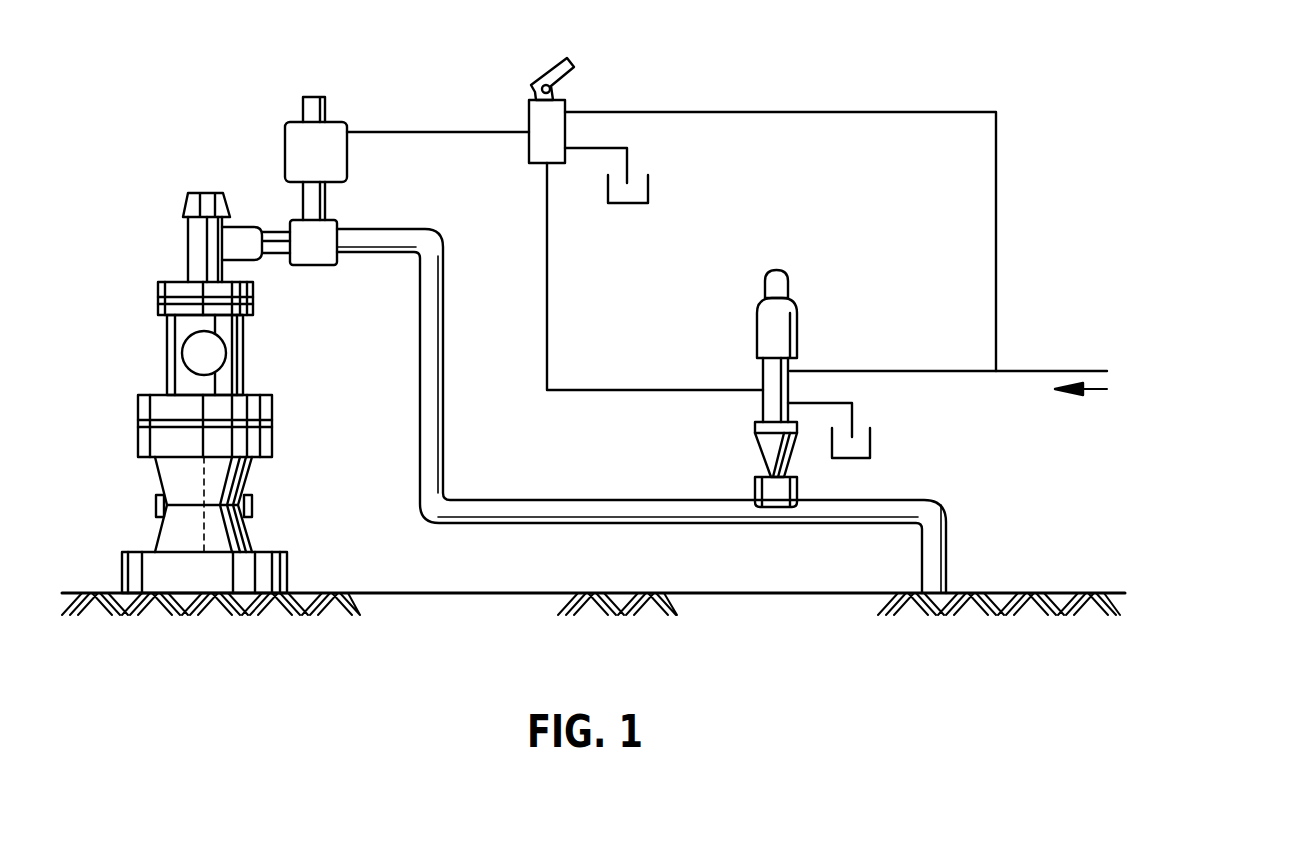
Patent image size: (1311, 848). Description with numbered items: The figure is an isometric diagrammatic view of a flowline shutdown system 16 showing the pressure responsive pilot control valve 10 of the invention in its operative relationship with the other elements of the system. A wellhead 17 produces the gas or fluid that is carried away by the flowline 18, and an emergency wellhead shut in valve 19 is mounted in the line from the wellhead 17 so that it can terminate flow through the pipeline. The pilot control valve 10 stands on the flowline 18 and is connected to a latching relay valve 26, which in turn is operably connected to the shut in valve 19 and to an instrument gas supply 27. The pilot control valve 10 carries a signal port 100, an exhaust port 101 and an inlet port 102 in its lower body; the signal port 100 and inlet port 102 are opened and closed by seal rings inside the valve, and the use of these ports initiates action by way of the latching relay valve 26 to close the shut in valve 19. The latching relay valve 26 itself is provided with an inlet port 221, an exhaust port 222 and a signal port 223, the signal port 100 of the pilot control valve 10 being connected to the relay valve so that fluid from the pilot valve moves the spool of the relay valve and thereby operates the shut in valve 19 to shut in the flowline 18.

The pressure responsive pilot control valve 10 is at (801, 376).
The flowline shutdown system 16 is at (1090, 205).
The wellhead 17 is at (288, 420).
The flowline 18 is at (566, 498).
The emergency wellhead shut in valve 19 is at (285, 143).
The latching relay valve 26 is at (568, 134).
The instrument gas supply 27 is at (1204, 445).
The signal port 100 is at (762, 390).
The exhaust port 101 is at (790, 402).
The inlet port 102 is at (790, 367).
The inlet port 221 is at (568, 110).
The exhaust port 222 is at (566, 163).
The signal port 223 is at (529, 128).